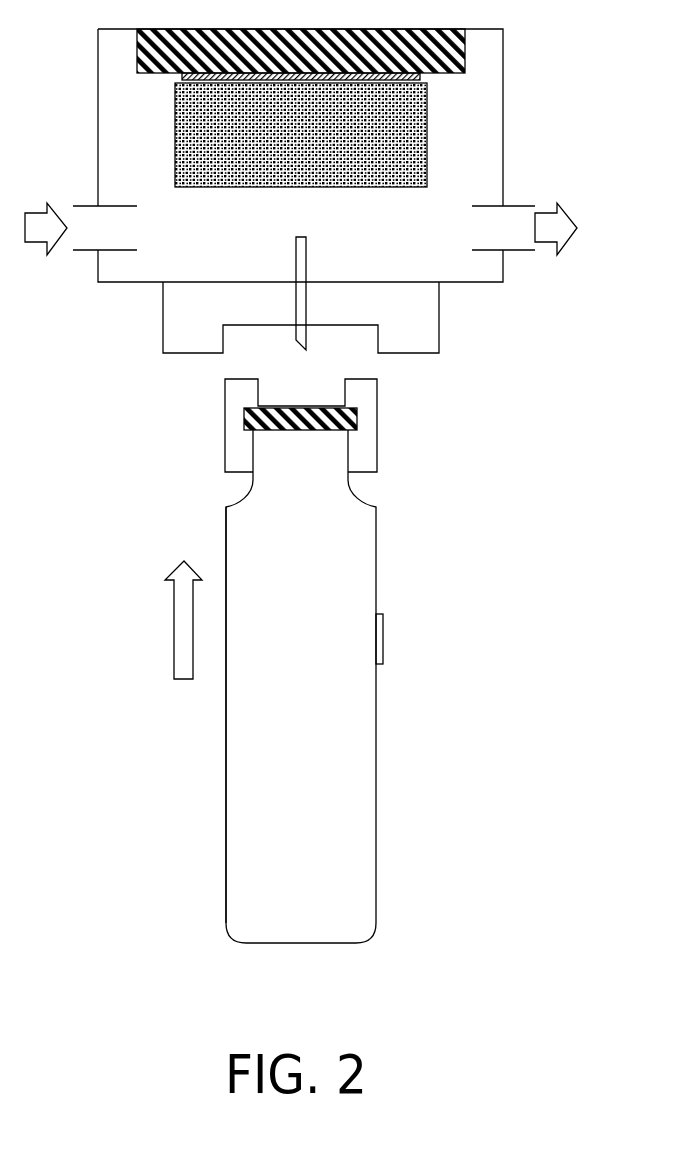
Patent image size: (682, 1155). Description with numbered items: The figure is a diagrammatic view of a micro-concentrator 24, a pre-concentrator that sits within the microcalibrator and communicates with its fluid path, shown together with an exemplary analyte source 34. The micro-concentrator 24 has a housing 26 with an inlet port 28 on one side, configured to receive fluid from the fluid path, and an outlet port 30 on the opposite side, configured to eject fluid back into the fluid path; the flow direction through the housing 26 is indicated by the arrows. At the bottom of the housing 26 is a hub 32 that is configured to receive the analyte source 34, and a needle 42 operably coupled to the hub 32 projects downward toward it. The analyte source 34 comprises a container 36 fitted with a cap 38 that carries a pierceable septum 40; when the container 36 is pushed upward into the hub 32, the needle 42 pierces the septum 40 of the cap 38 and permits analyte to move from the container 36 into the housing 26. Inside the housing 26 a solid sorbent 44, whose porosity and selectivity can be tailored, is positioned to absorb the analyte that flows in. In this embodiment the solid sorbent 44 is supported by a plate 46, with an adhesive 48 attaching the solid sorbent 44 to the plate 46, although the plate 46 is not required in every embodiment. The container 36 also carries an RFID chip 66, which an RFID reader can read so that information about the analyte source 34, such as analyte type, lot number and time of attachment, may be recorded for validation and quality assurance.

The micro-concentrator 24 is at (538, 57).
The housing 26 is at (98, 103).
The inlet port 28 is at (108, 206).
The outlet port 30 is at (492, 206).
The hub 32 is at (163, 315).
The analyte source 34 is at (378, 779).
The container 36 is at (226, 533).
The cap 38 is at (377, 462).
The pierceable septum 40 is at (323, 406).
The needle 42 is at (306, 268).
The solid sorbent 44 is at (427, 125).
The plate 46 is at (137, 79).
The adhesive 48 is at (420, 78).
The RFID chip 66 is at (383, 640).